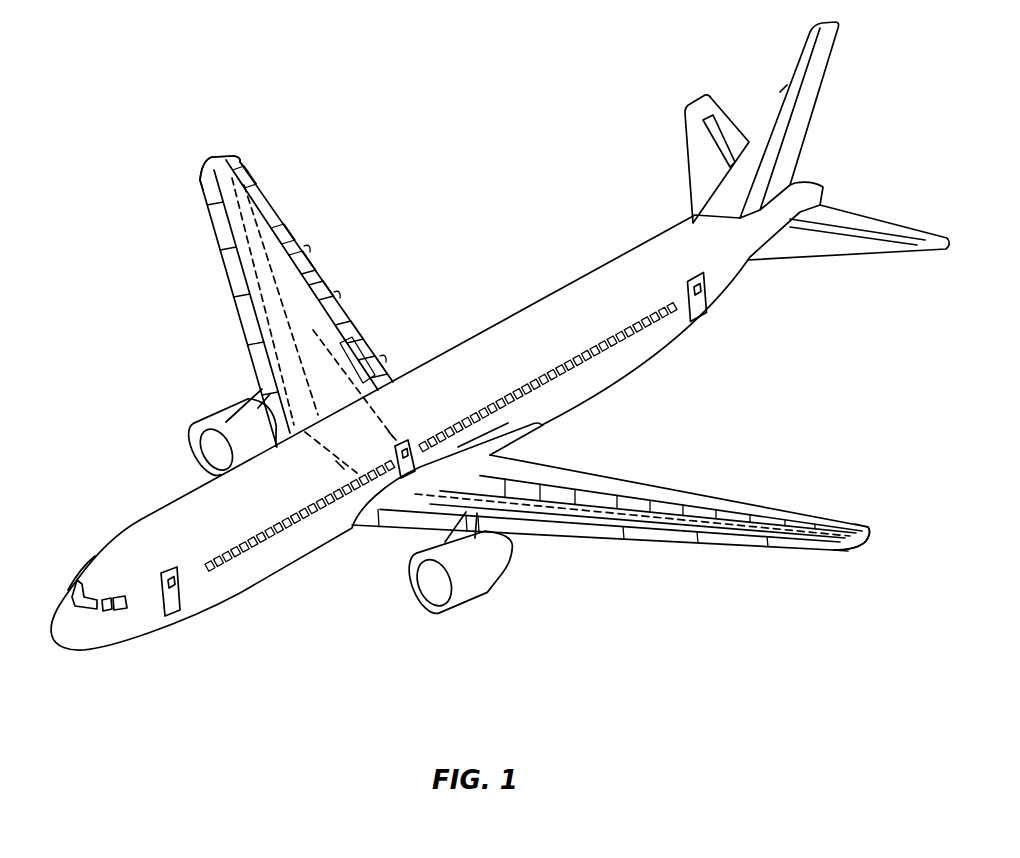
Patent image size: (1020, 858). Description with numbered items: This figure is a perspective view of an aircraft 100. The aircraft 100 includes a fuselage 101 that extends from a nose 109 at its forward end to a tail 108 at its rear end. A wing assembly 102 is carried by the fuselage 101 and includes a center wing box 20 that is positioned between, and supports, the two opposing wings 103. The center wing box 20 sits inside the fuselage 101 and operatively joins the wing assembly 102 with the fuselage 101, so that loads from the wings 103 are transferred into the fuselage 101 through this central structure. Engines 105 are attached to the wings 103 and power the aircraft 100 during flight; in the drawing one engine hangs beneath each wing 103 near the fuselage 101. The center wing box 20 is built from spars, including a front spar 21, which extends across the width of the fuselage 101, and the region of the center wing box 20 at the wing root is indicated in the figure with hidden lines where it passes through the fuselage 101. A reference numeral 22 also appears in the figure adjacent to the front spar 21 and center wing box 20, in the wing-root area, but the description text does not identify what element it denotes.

The aircraft 100 is at (443, 248).
The fuselage 101 is at (568, 396).
The wing assembly 102 is at (740, 470).
The wings 103 is at (249, 140).
The engines 105 is at (217, 434).
The tail 108 is at (821, 183).
The nose 109 is at (74, 656).
The center wing box 20 is at (353, 433).
The front spar 21 is at (340, 465).
The wing spar 22 is at (390, 435).